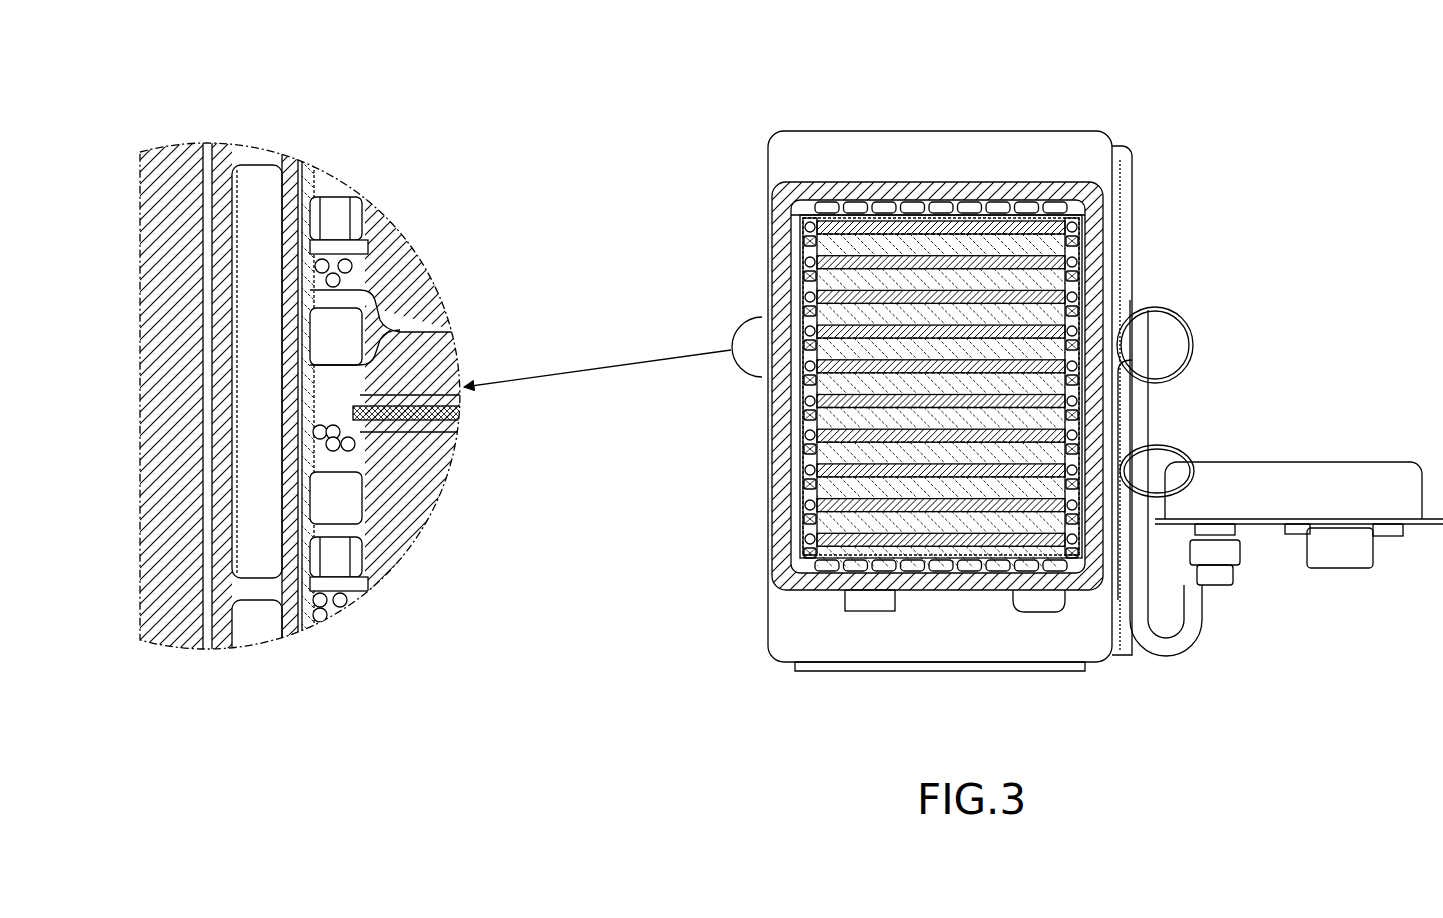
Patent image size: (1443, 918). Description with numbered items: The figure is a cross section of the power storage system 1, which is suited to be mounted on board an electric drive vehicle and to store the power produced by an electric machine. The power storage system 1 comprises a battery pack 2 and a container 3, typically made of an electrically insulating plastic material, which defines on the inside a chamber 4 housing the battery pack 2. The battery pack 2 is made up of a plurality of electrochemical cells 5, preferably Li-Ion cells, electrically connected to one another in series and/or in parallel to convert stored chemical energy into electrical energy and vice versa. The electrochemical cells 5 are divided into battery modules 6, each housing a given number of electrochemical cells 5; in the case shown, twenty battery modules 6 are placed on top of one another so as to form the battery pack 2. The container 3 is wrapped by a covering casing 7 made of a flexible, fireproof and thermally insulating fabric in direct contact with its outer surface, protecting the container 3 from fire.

The power storage system 1 is at (1008, 106).
The battery pack 2 is at (937, 213).
The container 3 is at (1037, 197).
The chamber 4 is at (836, 210).
The electrochemical cells 5 is at (1060, 272).
The battery modules 6 is at (823, 472).
The covering casing 7 is at (773, 512).